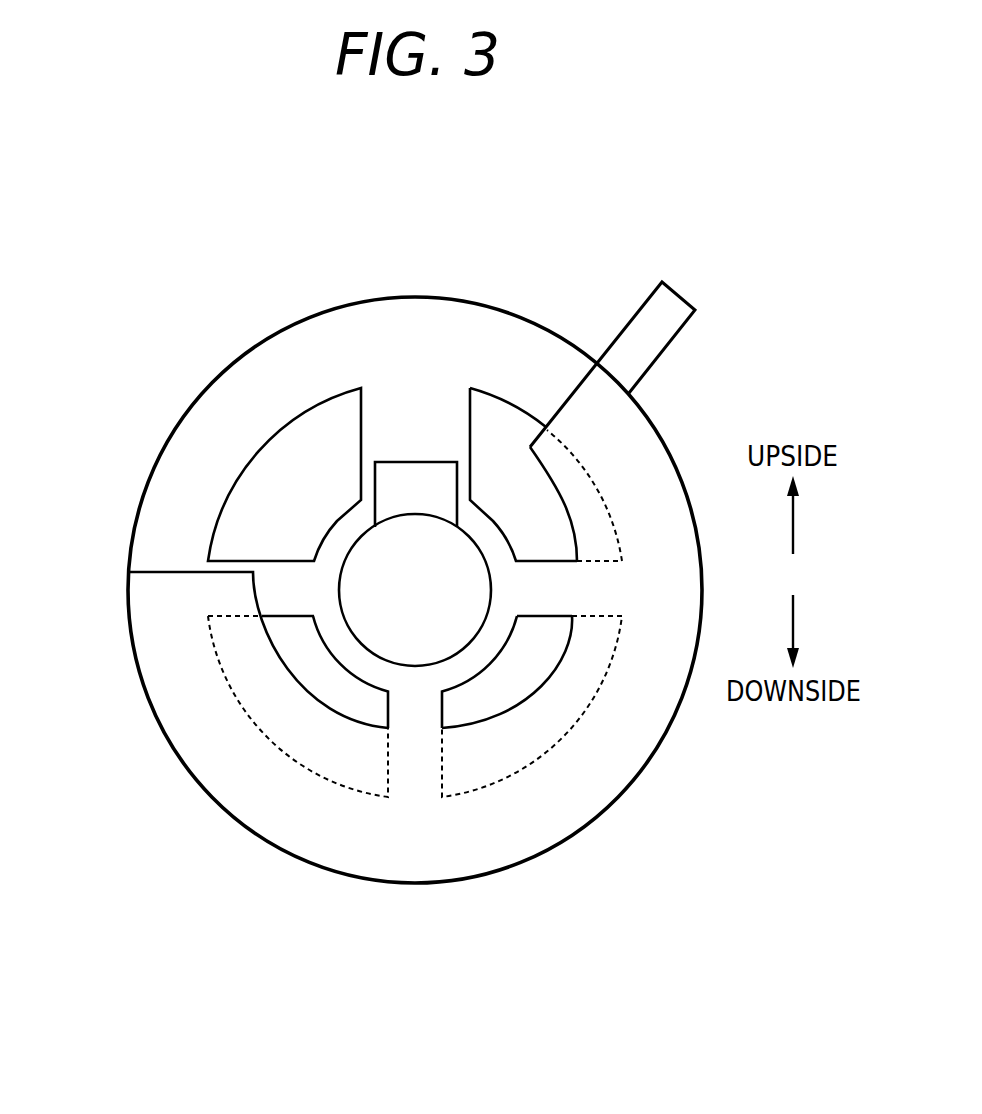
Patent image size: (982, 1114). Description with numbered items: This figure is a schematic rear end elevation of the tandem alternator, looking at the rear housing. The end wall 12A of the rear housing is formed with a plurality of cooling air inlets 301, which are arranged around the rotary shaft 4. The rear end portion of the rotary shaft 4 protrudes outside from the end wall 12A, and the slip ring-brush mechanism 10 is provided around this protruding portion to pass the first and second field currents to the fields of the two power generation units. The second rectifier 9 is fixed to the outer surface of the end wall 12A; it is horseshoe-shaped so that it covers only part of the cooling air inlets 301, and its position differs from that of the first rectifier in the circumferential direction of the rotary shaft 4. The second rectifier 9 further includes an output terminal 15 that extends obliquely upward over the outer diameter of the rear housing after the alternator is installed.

The rotary shaft 4 is at (387, 566).
The second rectifier 9 is at (553, 757).
The slip ring-brush mechanism 10 is at (413, 478).
The end wall 12A is at (413, 333).
The output terminal 15 is at (657, 315).
The cooling air inlets 301 is at (280, 515).